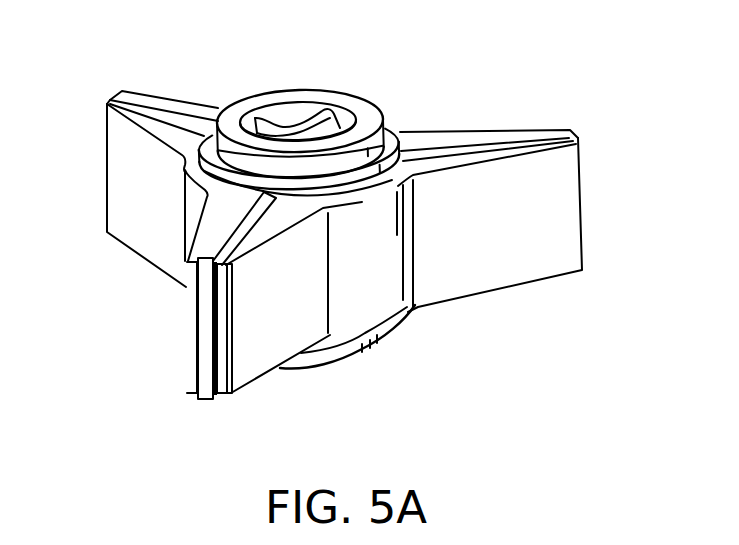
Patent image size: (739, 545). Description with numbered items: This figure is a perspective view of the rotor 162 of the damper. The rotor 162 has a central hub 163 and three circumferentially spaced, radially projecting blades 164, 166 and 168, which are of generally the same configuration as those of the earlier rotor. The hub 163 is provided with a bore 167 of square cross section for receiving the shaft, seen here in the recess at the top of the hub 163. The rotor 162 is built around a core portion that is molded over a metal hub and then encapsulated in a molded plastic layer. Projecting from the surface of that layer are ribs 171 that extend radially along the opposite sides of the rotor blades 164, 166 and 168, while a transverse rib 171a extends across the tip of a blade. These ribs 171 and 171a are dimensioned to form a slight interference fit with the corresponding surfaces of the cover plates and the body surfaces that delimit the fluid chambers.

The rotor 162 is at (328, 213).
The hub 163 is at (360, 307).
The blade 164 is at (541, 263).
The blade 166 is at (250, 350).
The bore 167 is at (330, 127).
The blade 168 is at (132, 212).
The rib 171 is at (167, 110).
The transverse rib 171a is at (206, 348).